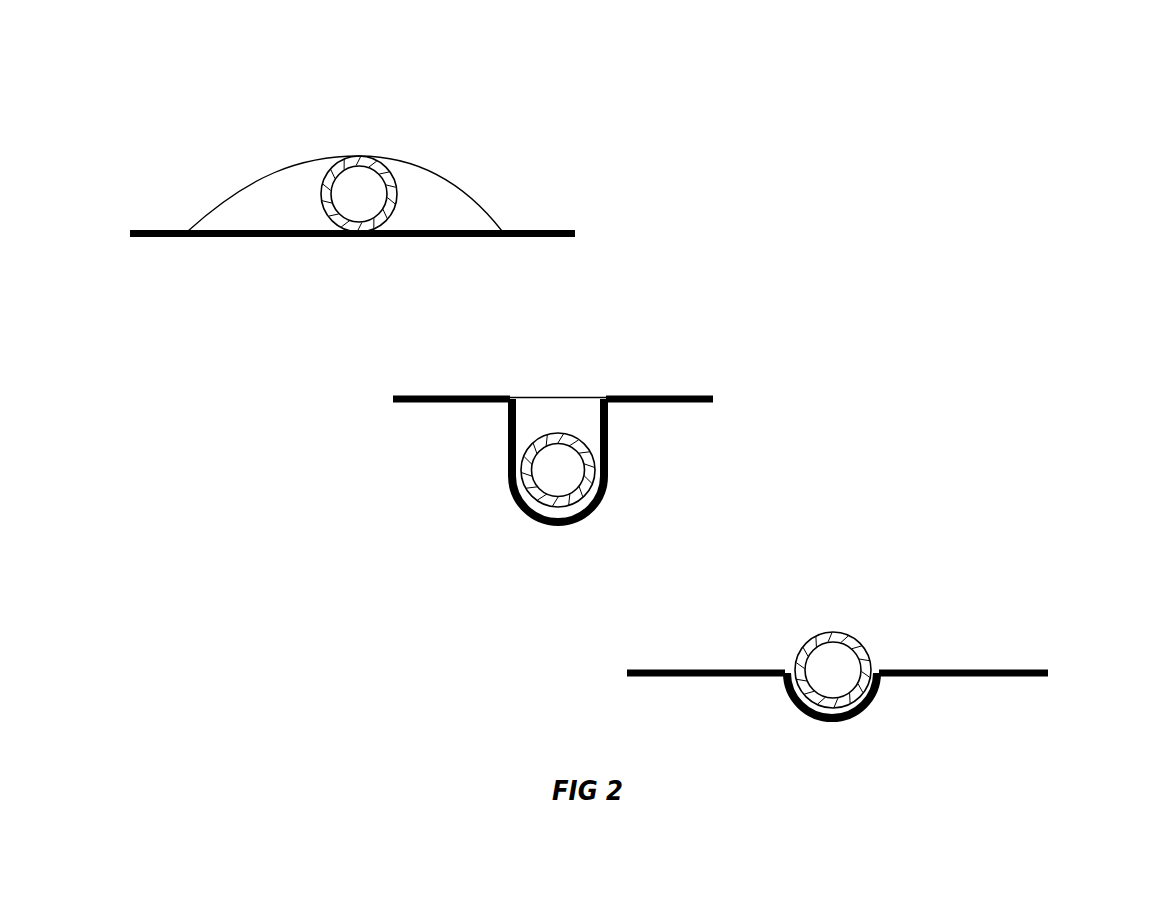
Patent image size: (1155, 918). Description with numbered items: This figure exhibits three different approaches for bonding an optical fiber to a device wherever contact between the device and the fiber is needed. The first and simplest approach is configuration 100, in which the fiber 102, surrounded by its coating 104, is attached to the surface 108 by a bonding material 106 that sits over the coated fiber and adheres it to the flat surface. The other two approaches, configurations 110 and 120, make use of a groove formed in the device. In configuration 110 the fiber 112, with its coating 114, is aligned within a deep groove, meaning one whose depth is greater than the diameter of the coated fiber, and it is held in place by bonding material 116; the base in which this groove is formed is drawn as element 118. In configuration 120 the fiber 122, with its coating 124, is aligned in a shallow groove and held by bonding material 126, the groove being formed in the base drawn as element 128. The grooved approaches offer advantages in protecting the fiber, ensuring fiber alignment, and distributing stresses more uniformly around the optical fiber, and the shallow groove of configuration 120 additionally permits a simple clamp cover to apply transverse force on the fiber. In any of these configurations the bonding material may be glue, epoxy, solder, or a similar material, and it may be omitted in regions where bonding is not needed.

The configuration 100 is at (563, 113).
The fiber 102 is at (345, 187).
The coating 104 is at (367, 160).
The bonding material 106 is at (278, 205).
The surface 108 is at (290, 238).
The configuration 110 is at (758, 295).
The fiber 112 is at (538, 465).
The coating 114 is at (593, 467).
The bonding material 116 is at (577, 418).
The base plate 118 is at (480, 395).
The configuration 120 is at (1010, 562).
The fiber 122 is at (820, 660).
The coating 124 is at (853, 640).
The bonding material 126 is at (850, 708).
The base plate 128 is at (755, 675).